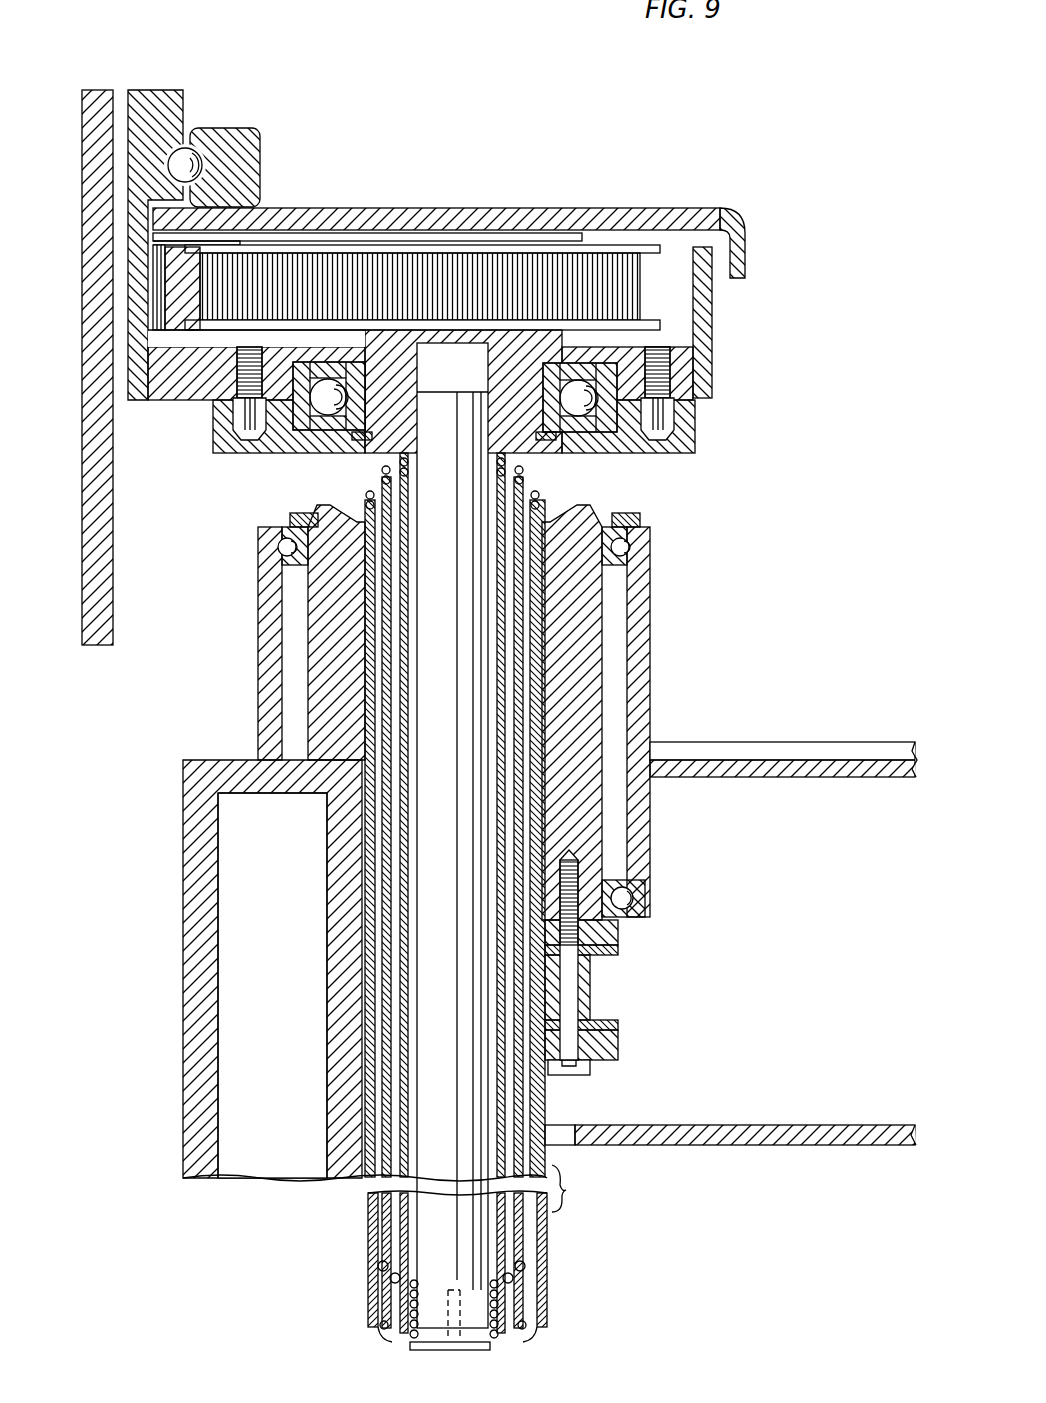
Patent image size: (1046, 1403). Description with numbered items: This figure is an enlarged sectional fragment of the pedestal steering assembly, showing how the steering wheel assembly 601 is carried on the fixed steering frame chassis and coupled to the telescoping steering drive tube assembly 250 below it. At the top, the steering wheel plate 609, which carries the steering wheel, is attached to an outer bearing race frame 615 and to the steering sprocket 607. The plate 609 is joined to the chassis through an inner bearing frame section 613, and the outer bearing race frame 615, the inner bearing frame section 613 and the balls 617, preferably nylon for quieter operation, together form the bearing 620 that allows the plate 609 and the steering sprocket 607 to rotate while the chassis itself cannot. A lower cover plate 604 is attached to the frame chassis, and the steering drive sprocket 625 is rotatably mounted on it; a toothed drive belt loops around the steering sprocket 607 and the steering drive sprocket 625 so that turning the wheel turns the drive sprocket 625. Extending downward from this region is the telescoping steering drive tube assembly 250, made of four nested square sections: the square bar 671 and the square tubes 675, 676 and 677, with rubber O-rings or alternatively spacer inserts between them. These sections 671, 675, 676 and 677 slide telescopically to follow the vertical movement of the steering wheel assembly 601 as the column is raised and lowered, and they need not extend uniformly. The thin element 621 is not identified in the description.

The inner bearing frame section 613 is at (181, 92).
The outer bearing race frame 615 is at (262, 154).
The balls 617 is at (198, 150).
The bearing 620 is at (212, 99).
The steering wheel assembly 601 is at (492, 192).
The steering wheel plate 609 is at (694, 208).
The ring plate 621 is at (254, 240).
The steering drive sprocket 625 is at (636, 302).
The steering sprocket 607 is at (175, 280).
The lower cover plate 604 is at (176, 392).
The telescoping steering drive tube assembly 250 is at (547, 1104).
The square tube section 677 is at (366, 1228).
The square tube section 676 is at (392, 1250).
The square tube section 675 is at (408, 1295).
The square bar 671 is at (500, 1350).